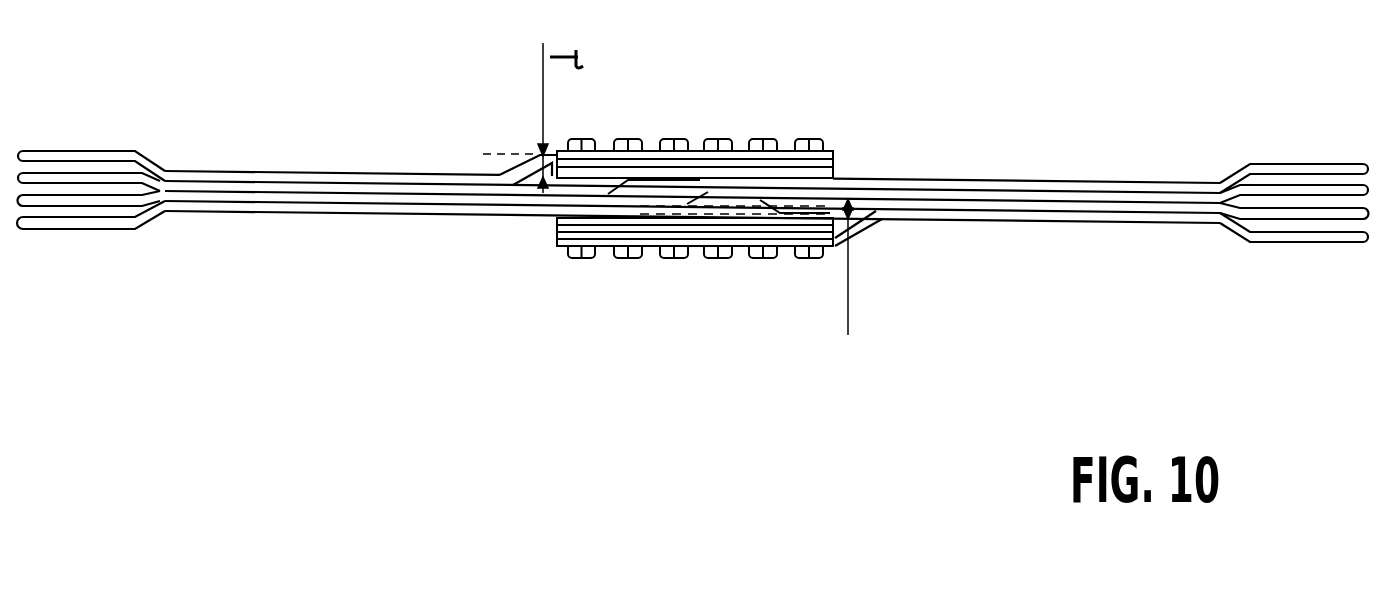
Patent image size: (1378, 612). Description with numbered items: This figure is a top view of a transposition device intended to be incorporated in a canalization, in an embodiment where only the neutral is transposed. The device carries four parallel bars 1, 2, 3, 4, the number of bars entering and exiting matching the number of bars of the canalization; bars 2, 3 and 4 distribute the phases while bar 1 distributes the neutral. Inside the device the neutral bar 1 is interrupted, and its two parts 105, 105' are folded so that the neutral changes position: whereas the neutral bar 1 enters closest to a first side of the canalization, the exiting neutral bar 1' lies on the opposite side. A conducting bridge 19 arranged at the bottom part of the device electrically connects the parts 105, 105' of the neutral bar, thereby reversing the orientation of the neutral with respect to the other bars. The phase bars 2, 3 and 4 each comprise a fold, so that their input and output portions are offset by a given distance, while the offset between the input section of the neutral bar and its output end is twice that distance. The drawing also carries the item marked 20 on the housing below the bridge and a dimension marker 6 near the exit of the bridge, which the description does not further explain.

The bar 1 is at (185, 94).
The bar 2 is at (275, 193).
The bar 3 is at (353, 203).
The bar 4 is at (430, 213).
The conducting bridge 19 is at (615, 166).
The connector lower housing 20 is at (634, 195).
The part of the neutral bar 105 is at (692, 131).
The part of the neutral bar 105' is at (1032, 287).
The neutral bar 1' is at (1276, 267).
The offset dimension 6 is at (889, 276).